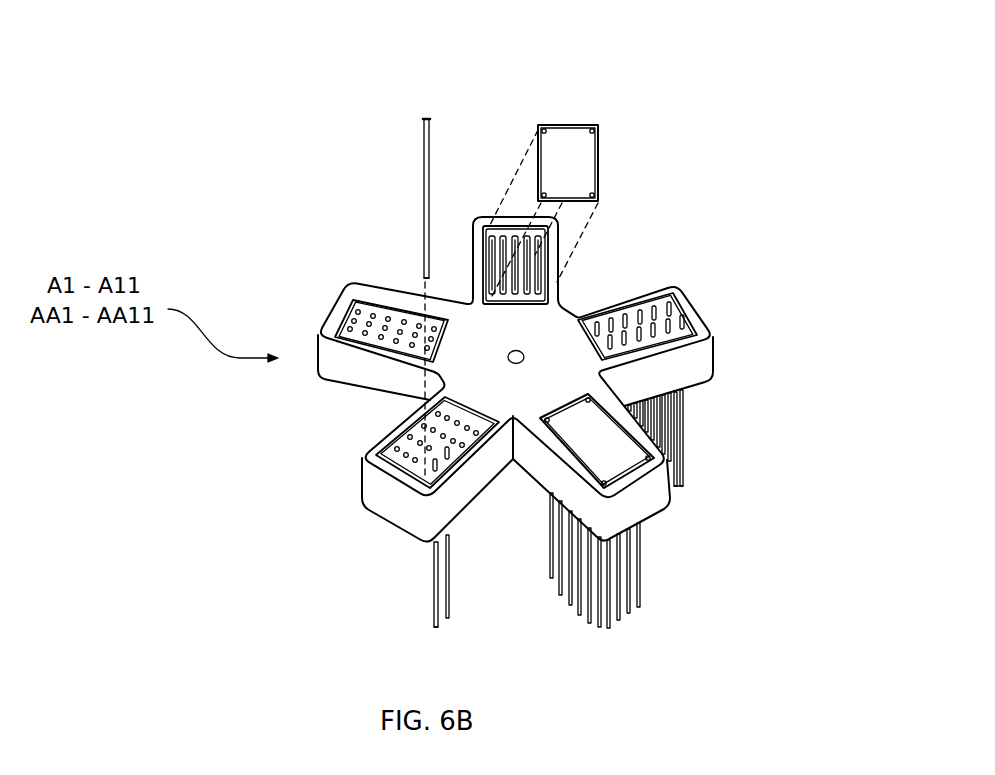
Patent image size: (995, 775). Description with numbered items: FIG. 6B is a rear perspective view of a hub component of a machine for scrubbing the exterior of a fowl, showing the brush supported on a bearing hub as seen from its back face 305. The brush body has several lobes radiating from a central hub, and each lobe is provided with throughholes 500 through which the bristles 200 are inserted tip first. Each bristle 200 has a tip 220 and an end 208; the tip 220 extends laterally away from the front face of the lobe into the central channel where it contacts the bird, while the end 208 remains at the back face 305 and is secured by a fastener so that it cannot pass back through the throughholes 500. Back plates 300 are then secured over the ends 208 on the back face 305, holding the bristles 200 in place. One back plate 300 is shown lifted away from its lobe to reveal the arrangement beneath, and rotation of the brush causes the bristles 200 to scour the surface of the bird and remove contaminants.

The bristles 200 is at (422, 182).
The end 208 is at (427, 120).
The tip 220 is at (428, 278).
The back plates 300 is at (578, 165).
The back face 305 is at (552, 342).
The throughholes 500 is at (370, 317).